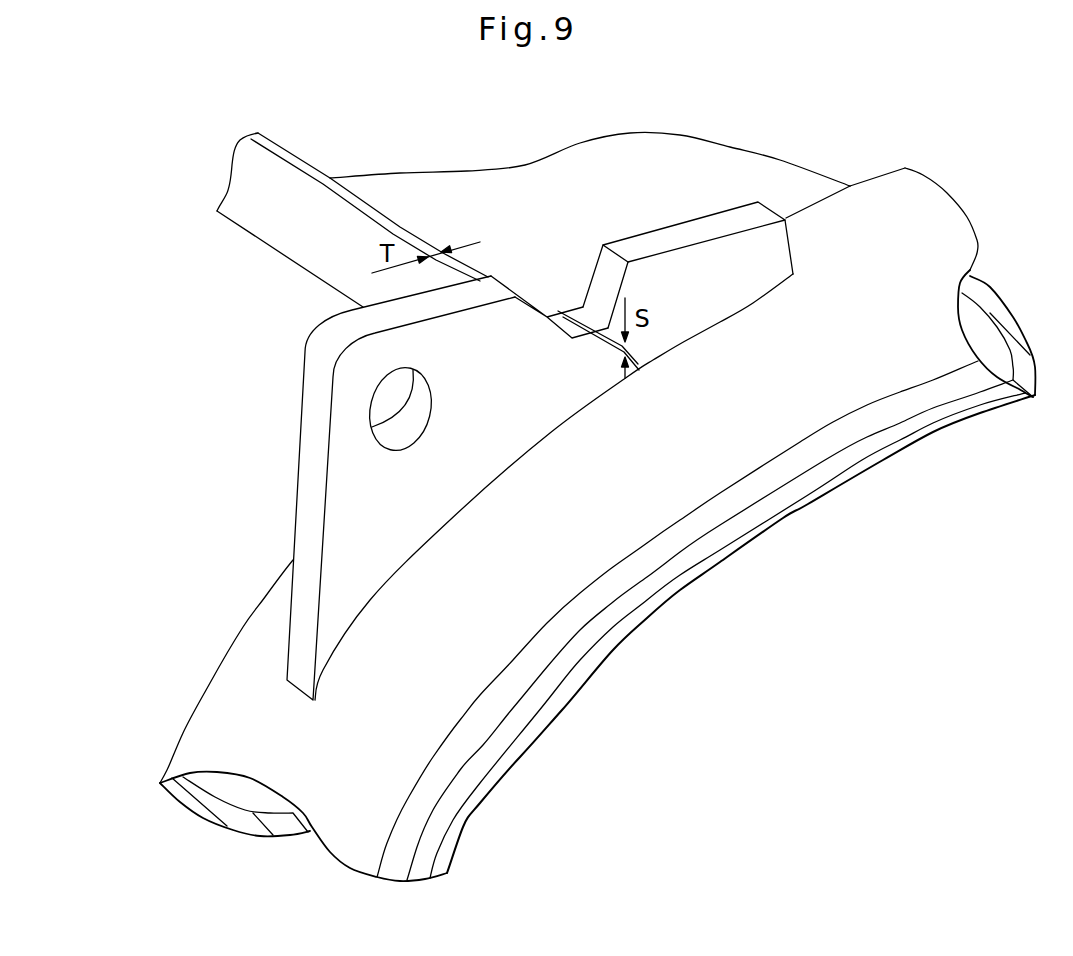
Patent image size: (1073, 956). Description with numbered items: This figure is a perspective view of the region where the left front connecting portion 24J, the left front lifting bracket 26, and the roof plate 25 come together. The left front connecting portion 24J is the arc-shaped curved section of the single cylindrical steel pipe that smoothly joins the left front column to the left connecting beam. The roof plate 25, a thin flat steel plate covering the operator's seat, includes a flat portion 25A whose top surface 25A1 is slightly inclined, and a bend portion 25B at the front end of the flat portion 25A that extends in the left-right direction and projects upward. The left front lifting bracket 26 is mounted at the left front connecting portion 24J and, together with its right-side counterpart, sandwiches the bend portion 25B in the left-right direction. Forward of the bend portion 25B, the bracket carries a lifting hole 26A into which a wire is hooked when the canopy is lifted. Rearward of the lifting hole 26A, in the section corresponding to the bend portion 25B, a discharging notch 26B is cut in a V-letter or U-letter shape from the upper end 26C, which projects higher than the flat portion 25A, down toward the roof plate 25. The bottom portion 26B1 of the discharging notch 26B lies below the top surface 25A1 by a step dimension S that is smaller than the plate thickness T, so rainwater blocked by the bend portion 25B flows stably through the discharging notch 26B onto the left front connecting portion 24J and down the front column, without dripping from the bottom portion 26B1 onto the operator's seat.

The left front connecting portion 24J is at (656, 606).
The roof plate 25 is at (802, 172).
The flat portion 25A is at (388, 190).
The top surface 25A1 is at (740, 177).
The bend portion 25B is at (250, 217).
The left front lifting bracket 26 is at (332, 333).
The lifting hole 26A is at (383, 403).
The discharging notch 26B is at (603, 272).
The bottom portion 26B1 is at (558, 320).
The upper end 26C is at (648, 240).